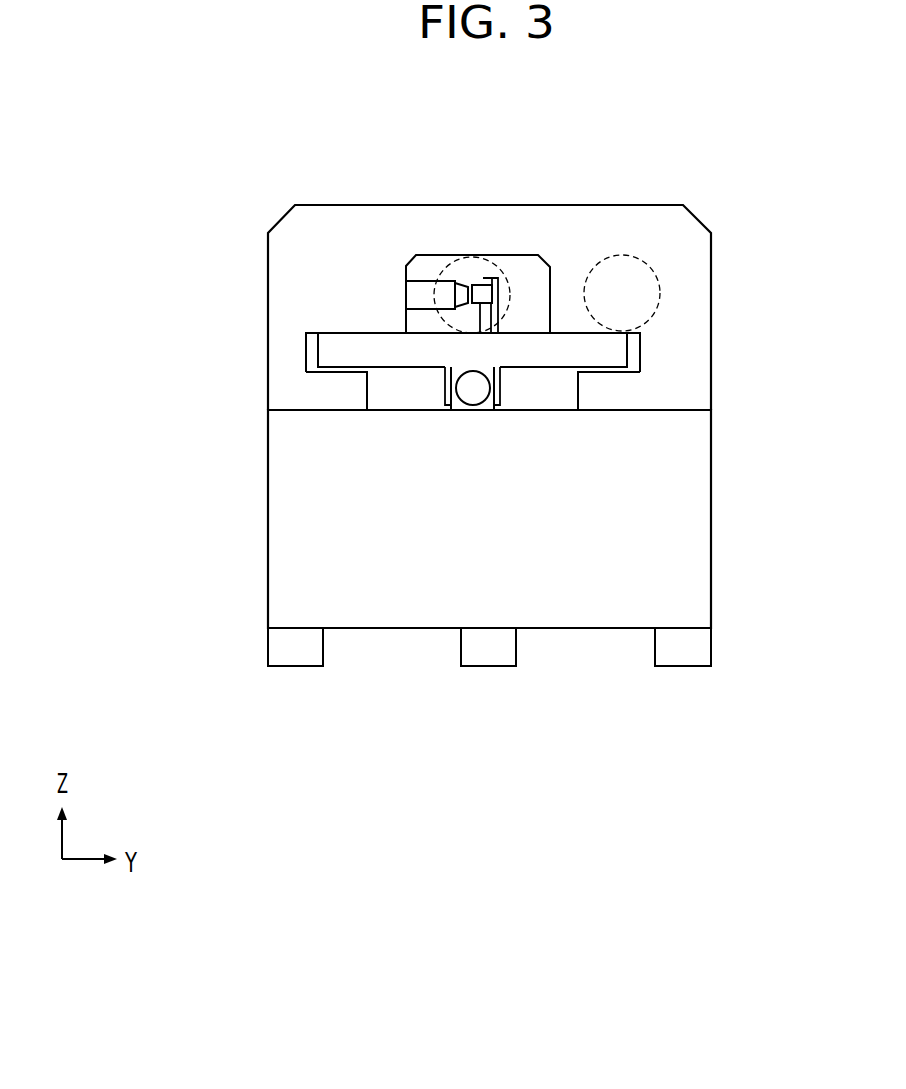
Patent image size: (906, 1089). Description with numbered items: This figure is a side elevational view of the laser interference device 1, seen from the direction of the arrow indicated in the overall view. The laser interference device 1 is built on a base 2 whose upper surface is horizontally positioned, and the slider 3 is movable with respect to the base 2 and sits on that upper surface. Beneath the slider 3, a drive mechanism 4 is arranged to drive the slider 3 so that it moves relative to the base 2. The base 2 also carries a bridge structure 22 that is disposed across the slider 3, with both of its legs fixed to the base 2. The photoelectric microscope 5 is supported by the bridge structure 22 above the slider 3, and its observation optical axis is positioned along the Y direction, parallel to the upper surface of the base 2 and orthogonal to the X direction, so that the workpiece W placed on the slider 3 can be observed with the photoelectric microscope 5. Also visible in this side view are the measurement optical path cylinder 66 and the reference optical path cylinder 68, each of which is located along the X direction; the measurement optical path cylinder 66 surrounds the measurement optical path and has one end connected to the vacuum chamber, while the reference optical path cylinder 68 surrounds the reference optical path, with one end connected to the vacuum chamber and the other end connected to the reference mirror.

The laser interference device 1 is at (188, 138).
The base 2 is at (285, 498).
The slider 3 is at (322, 350).
The drive mechanism 4 is at (422, 394).
The photoelectric microscope 5 is at (428, 295).
The workpiece W is at (481, 293).
The bridge structure 22 is at (347, 205).
The measurement optical path cylinder 66 is at (506, 270).
The reference optical path cylinder 68 is at (659, 278).